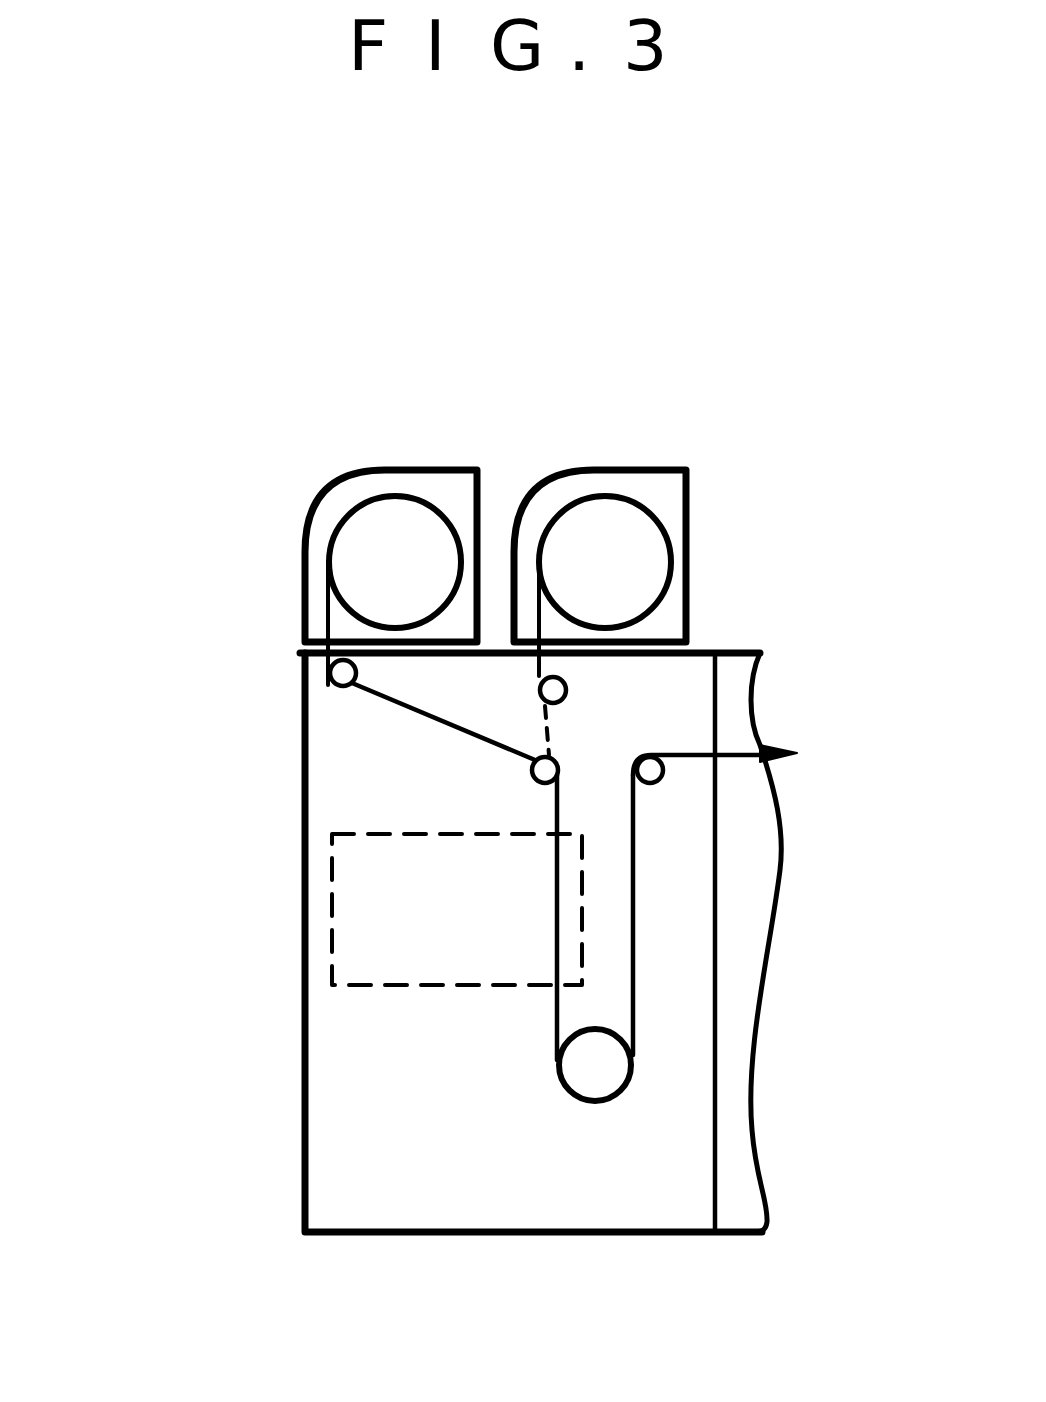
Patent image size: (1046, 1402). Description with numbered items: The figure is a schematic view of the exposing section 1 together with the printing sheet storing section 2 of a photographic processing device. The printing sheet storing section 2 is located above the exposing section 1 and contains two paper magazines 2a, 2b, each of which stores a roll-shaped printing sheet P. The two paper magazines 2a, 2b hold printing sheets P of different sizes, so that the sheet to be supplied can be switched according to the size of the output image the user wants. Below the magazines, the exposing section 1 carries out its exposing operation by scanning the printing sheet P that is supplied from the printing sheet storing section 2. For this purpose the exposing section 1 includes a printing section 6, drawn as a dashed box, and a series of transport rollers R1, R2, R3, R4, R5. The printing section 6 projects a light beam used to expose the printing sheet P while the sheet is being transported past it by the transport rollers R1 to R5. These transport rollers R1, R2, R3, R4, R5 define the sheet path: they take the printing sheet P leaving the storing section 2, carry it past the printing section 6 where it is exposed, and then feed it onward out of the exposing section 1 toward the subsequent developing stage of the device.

The exposing section 1 is at (203, 638).
The printing sheet storing section 2 is at (640, 365).
The paper magazine 2a is at (425, 470).
The paper magazine 2b is at (593, 470).
The printing section 6 is at (330, 908).
The transport roller R1 is at (330, 682).
The transport roller R2 is at (532, 772).
The transport roller R3 is at (578, 1100).
The transport roller R4 is at (658, 780).
The transport roller R5 is at (567, 690).
The printing sheet P is at (633, 928).